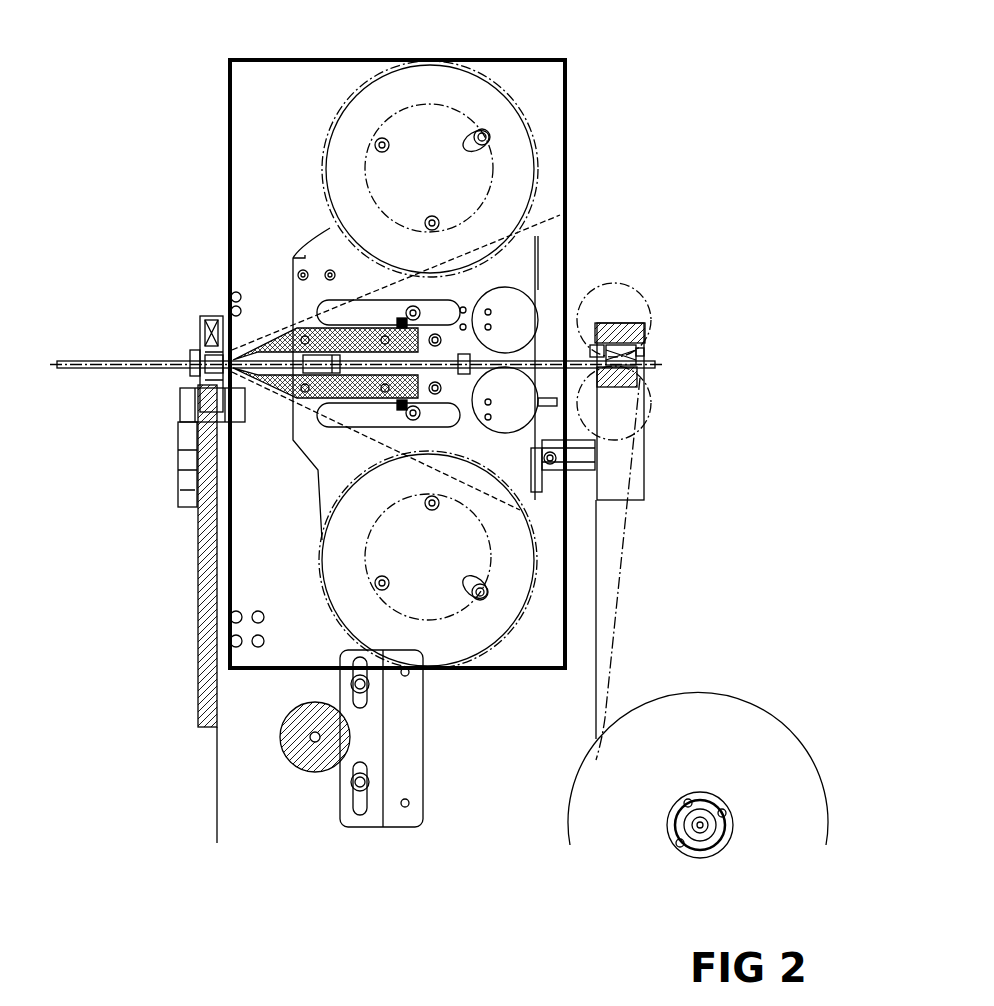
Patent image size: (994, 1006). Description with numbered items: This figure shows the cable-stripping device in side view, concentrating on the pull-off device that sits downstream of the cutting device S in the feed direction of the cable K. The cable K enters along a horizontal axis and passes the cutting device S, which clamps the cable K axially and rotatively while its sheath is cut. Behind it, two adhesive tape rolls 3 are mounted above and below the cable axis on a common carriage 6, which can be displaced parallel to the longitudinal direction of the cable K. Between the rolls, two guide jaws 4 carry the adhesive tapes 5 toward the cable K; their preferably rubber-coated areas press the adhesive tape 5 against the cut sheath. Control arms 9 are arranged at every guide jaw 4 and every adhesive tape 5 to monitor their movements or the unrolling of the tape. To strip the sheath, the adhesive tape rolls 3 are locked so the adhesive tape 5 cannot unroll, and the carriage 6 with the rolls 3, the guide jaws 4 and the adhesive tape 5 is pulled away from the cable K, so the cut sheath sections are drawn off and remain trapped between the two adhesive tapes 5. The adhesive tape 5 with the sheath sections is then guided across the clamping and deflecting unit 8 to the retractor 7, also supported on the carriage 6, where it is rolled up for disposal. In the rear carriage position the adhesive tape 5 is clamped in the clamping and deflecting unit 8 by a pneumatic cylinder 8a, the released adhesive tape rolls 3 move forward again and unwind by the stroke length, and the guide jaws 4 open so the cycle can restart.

The adhesive tape rolls 3 is at (503, 120).
The guide jaws 4 is at (203, 325).
The adhesive tape 5 is at (275, 325).
The carriage 6 is at (333, 247).
The retractor 7 is at (731, 739).
The clamping and deflecting unit 8 is at (632, 332).
The pneumatic cylinder 8a is at (627, 358).
The control arms 9 is at (440, 303).
The cutting device S is at (188, 348).
The cable K is at (90, 365).